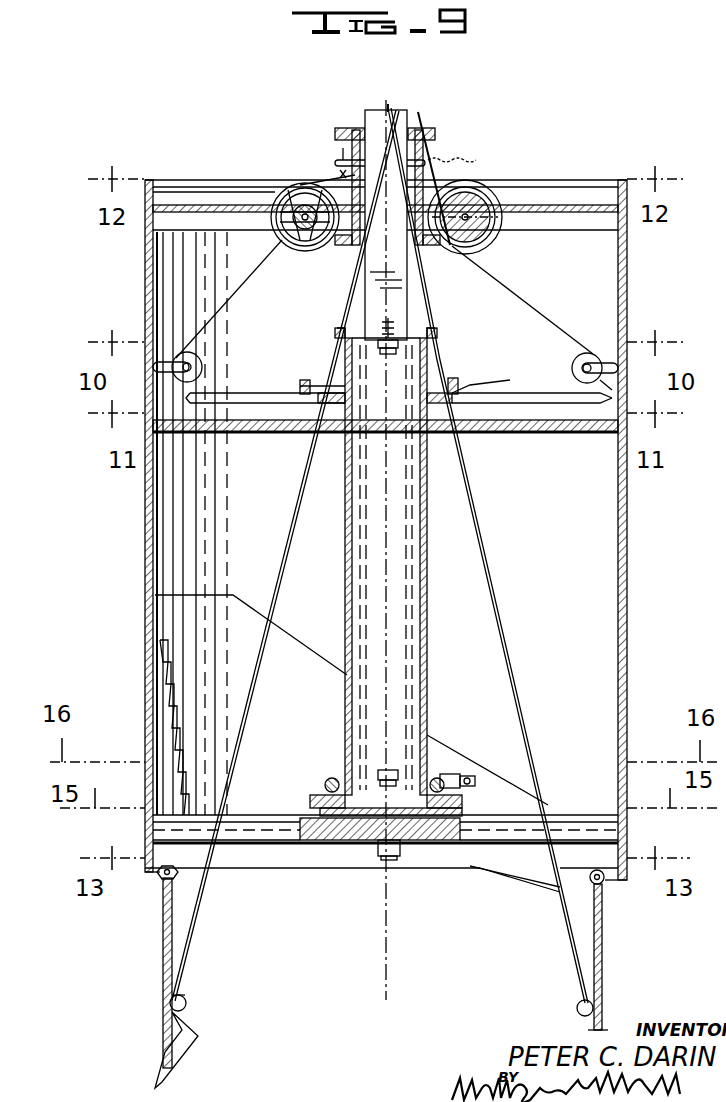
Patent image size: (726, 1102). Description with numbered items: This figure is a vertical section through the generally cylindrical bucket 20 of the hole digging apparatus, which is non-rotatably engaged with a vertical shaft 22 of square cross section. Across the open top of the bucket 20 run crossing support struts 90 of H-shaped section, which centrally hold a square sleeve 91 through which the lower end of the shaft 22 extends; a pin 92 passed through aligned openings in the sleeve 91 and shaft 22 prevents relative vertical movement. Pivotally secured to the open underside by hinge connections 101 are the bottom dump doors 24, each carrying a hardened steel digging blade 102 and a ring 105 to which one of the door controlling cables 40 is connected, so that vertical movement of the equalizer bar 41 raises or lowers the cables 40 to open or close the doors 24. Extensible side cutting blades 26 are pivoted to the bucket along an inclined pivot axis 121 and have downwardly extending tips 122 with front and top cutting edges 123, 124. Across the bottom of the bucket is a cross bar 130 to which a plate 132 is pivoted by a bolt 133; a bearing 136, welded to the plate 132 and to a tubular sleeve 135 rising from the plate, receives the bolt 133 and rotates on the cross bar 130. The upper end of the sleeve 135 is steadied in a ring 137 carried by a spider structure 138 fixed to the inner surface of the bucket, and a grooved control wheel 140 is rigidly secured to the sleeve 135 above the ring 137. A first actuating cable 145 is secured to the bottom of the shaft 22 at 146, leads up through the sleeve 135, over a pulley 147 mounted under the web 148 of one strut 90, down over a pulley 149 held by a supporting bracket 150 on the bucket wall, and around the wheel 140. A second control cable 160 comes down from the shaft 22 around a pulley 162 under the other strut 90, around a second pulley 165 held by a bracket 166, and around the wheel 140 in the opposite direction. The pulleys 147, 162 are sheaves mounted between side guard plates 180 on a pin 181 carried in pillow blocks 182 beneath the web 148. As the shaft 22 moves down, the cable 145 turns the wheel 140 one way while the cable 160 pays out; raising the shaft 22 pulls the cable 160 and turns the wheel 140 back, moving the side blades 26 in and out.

The bucket 20 is at (627, 640).
The vertical shaft 22 is at (404, 112).
The bottom dump doors 24 is at (163, 942).
The side cutting blades 26 is at (312, 668).
The door controlling cables 40 is at (512, 656).
The equalizer bar 41 is at (192, 523).
The support struts 90 is at (565, 205).
The sleeve 91 is at (456, 180).
The pin 92 is at (348, 162).
The hinge connection 101 is at (164, 876).
The digging blade 102 is at (186, 1062).
The ring 105 is at (187, 1003).
The inclined pivot axis 121 is at (162, 664).
The downwardly extending tips 122 is at (528, 890).
The front cutting edge 123 is at (602, 882).
The top cutting edge 124 is at (540, 792).
The cross bar 130 is at (522, 832).
The plate 132 is at (470, 786).
The pivot bolt 133 is at (395, 835).
The tubular sleeve 135 is at (428, 614).
The bearing 136 is at (352, 840).
The ring 137 is at (440, 430).
The spider structure 138 is at (565, 428).
The control wheel 140 is at (540, 389).
The first actuating cable 145 is at (240, 268).
The cable securing point 146 is at (389, 356).
The pulley 147 is at (306, 184).
The web 148 is at (222, 215).
The pulley 149 is at (202, 362).
The supporting bracket 150 is at (170, 368).
The second control cable 160 is at (538, 272).
The pulley 162 is at (492, 203).
The second pulley 165 is at (590, 352).
The bracket 166 is at (612, 368).
The side guard plates 180 is at (298, 252).
The pin 181 is at (312, 232).
The pillow blocks 182 is at (292, 232).